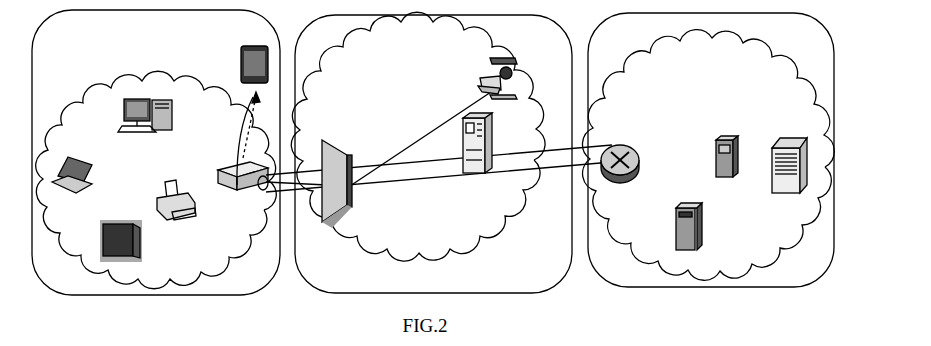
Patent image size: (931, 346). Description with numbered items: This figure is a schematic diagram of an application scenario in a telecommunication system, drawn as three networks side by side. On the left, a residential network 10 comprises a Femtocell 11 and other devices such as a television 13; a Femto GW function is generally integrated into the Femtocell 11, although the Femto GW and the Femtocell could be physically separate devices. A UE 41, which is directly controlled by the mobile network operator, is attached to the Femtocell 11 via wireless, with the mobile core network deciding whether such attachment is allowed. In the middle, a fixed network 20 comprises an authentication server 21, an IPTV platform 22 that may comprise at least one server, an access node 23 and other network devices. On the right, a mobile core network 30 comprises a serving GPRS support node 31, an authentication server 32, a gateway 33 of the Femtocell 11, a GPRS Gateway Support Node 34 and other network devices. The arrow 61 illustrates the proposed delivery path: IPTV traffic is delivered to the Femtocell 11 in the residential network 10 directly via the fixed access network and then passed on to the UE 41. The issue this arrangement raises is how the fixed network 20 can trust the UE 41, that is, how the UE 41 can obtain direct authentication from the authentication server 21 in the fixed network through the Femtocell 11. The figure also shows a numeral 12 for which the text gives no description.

The residential network 10 is at (232, 254).
The Femtocell 11 is at (237, 198).
The television 12 is at (137, 248).
The television 13 is at (143, 132).
The fixed network 20 is at (478, 238).
The authentication server 21 is at (467, 178).
The IPTV platform 22 is at (505, 64).
The access node 23 is at (353, 190).
The mobile core network 30 is at (786, 241).
The serving GPRS support node 31 is at (715, 137).
The authentication server 32 is at (783, 197).
The gateway of the Femtocell 33 is at (641, 158).
The GPRS Gateway Support Node 34 is at (700, 222).
The UE 41 is at (243, 53).
The arrow 61 is at (238, 155).